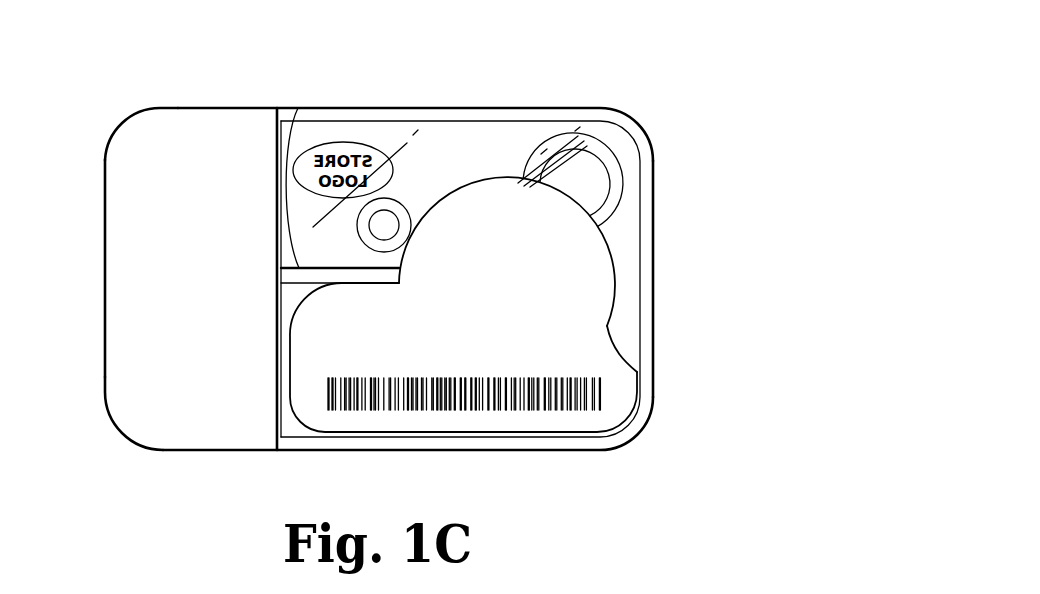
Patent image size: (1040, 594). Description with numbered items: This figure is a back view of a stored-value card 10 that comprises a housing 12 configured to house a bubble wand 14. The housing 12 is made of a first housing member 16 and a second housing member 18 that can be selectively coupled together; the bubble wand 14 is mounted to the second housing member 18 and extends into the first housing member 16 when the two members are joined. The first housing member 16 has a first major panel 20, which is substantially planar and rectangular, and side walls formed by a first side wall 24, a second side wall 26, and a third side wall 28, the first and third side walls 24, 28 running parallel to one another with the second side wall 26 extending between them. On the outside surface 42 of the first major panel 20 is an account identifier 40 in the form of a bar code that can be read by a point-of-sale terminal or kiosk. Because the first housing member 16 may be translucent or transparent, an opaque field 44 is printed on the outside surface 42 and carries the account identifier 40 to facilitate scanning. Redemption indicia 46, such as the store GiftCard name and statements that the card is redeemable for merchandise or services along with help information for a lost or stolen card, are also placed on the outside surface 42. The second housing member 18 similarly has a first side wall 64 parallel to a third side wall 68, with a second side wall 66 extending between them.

The stored-value card 10 is at (648, 60).
The housing 12 is at (635, 165).
The bubble wand 14 is at (288, 130).
The first housing member 16 is at (477, 162).
The second housing member 18 is at (219, 151).
The first major panel 20 is at (625, 232).
The first side wall 24 is at (525, 451).
The second side wall 26 is at (655, 353).
The third side wall 28 is at (398, 108).
The account identifier 40 is at (598, 393).
The outside surface 42 is at (627, 203).
The opaque field 44 is at (313, 363).
The redemption indicia 46 is at (610, 320).
The first side wall 64 is at (155, 450).
The second side wall 66 is at (105, 278).
The third side wall 68 is at (178, 108).